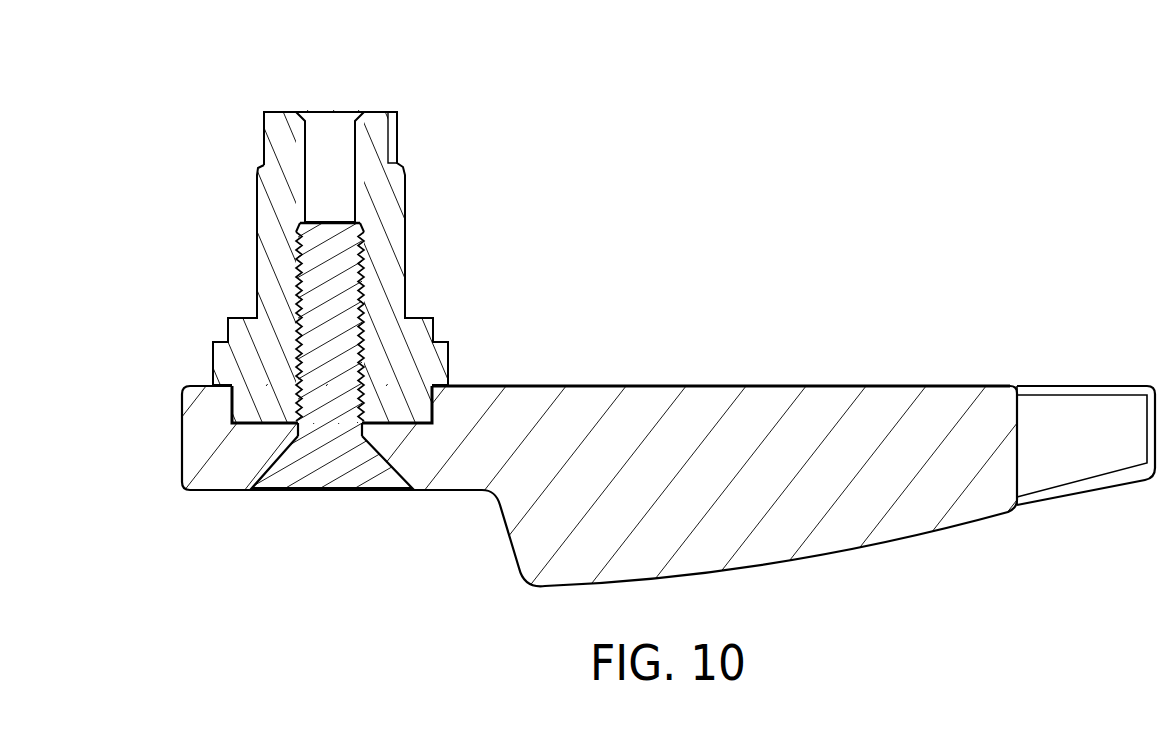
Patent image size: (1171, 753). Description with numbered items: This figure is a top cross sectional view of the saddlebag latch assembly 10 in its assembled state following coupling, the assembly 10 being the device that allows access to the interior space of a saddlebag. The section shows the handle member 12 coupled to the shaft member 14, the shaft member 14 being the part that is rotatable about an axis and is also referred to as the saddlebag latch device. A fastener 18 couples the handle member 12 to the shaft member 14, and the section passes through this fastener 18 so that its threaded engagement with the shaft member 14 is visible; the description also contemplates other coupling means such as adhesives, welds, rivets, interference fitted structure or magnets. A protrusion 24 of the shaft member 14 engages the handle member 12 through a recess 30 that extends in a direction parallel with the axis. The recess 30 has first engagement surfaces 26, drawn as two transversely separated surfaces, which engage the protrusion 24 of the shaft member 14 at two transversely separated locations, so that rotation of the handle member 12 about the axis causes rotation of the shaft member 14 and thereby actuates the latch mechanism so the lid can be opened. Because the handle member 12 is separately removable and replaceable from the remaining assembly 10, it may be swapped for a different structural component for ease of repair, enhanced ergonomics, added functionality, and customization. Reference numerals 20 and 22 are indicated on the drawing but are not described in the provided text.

The saddlebag latch assembly 10 is at (585, 329).
The handle member 12 is at (585, 485).
The shaft member 14 is at (333, 224).
The fastener 18 is at (344, 366).
The socket head 20 is at (386, 88).
The upper surface 22 is at (469, 377).
The protrusion 24 is at (282, 403).
The first engagement surfaces 26 is at (237, 402).
The recess 30 is at (413, 423).